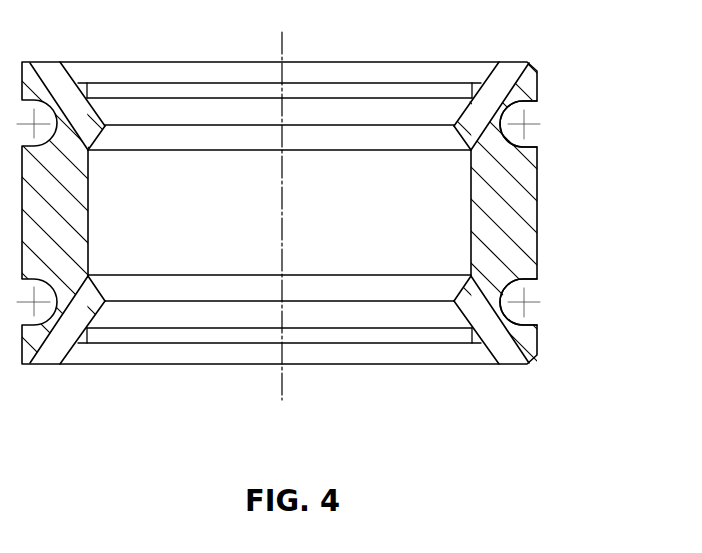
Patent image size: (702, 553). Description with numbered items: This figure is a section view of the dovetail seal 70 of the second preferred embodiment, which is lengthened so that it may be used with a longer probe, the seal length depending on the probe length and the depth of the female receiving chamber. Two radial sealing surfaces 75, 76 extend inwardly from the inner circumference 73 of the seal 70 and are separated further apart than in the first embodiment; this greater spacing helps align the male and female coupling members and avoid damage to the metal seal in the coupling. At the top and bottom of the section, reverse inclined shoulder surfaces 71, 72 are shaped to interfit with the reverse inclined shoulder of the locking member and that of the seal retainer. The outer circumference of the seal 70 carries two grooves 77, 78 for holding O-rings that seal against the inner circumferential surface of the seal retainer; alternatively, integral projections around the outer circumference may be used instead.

The seal 70 is at (323, 243).
The reverse inclined shoulder surface 71 is at (86, 83).
The reverse inclined shoulder surface 72 is at (80, 357).
The inner circumference 73 is at (279, 277).
The radial sealing surface 75 is at (145, 92).
The radial sealing surface 76 is at (138, 340).
The groove 77 is at (571, 114).
The groove 78 is at (571, 292).